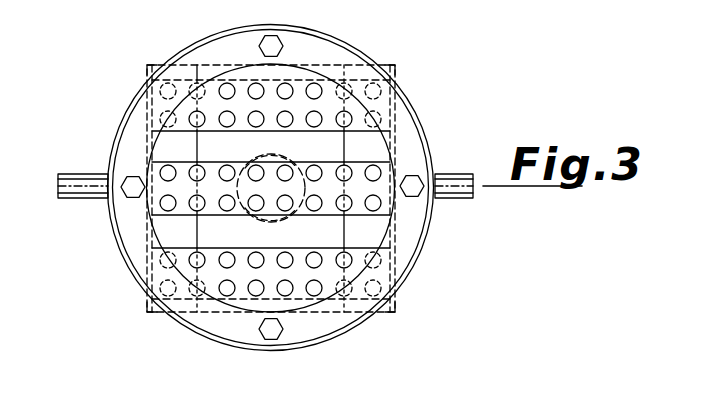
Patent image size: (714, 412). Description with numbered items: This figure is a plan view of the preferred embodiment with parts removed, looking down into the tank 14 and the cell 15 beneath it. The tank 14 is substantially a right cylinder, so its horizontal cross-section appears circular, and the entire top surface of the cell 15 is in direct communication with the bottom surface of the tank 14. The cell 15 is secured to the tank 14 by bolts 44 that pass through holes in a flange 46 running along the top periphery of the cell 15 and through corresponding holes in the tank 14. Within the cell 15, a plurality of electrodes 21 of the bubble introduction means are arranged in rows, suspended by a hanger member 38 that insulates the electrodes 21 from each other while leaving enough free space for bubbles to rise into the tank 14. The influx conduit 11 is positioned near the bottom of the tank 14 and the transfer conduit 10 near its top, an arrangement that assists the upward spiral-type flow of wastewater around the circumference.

The transfer conduit 10 is at (452, 173).
The influx conduit 11 is at (86, 197).
The tank 14 is at (340, 43).
The cell 15 is at (395, 64).
The electrodes 21 is at (191, 116).
The hanger member 38 is at (158, 185).
The bolts 44 is at (437, 200).
The flange 46 is at (403, 132).